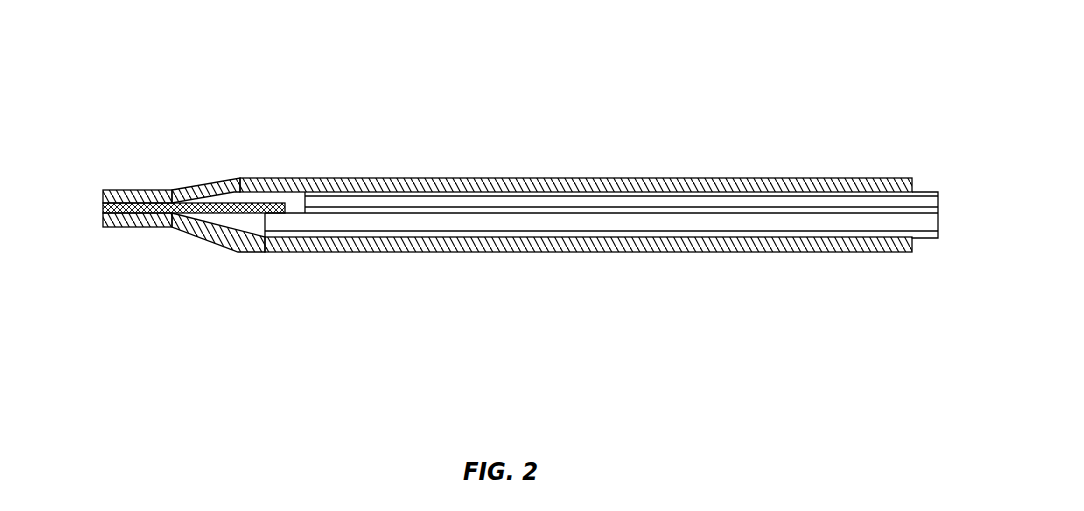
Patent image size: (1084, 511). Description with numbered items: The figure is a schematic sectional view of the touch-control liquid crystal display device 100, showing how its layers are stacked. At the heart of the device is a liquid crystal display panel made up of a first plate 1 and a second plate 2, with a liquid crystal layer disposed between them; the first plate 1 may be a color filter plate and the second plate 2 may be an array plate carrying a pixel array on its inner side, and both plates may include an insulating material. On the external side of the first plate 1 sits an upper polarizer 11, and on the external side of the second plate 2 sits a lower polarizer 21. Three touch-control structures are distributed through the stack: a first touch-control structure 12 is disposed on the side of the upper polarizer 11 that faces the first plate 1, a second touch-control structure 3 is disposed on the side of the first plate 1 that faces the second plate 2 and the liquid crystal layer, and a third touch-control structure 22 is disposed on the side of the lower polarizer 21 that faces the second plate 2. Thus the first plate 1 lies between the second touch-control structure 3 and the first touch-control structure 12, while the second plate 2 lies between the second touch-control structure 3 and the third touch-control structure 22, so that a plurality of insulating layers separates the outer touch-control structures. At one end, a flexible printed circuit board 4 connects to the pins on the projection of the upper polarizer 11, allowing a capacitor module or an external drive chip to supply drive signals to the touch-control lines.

The touch-control liquid crystal display device 100 is at (858, 79).
The first plate 1 is at (393, 200).
The upper polarizer 11 is at (250, 180).
The first touch-control structure 12 is at (327, 188).
The second plate 2 is at (522, 228).
The lower polarizer 21 is at (258, 252).
The third touch-control structure 22 is at (334, 233).
The second touch-control structure 3 is at (920, 210).
The flexible printed circuit board 4 is at (116, 190).